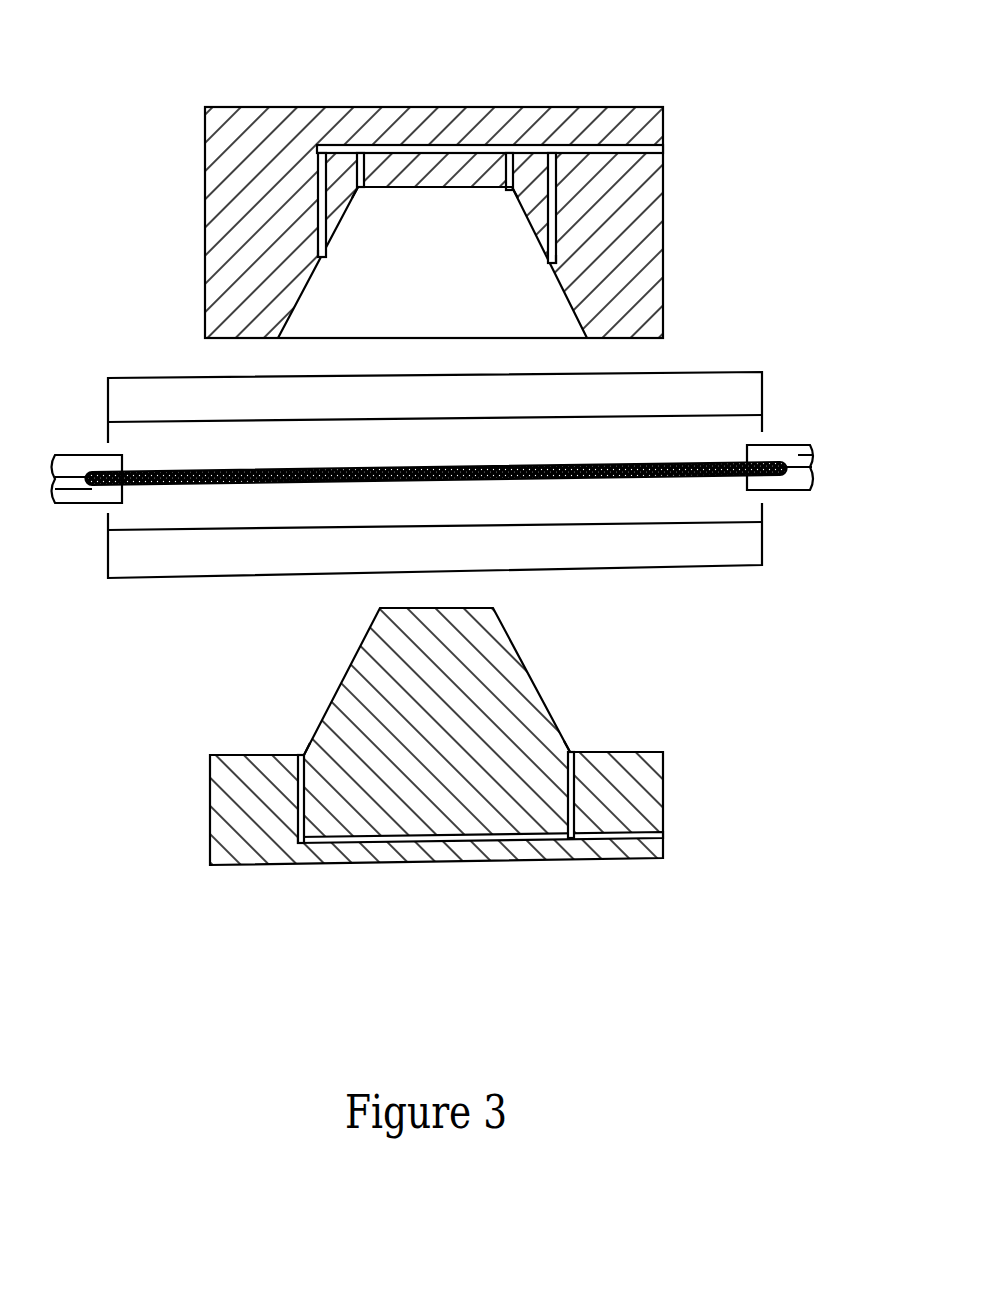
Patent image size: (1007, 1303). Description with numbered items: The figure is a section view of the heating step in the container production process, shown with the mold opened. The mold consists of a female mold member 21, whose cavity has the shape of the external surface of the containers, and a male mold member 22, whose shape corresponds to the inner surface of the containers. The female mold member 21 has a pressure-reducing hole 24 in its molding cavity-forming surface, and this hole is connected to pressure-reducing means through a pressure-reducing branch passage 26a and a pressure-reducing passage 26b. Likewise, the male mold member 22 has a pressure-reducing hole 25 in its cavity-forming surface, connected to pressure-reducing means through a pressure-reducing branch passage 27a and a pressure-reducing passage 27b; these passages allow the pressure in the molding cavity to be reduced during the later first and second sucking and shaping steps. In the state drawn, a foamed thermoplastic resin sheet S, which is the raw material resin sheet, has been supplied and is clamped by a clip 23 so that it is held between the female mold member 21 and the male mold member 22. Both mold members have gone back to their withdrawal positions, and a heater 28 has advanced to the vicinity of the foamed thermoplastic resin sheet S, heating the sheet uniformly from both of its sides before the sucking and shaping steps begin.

The female mold member 21 is at (663, 195).
The male mold member 22 is at (457, 803).
The clip 23 is at (812, 450).
The pressure-reducing hole 24 is at (360, 204).
The pressure-reducing hole 25 is at (297, 744).
The pressure-reducing branch passage 26a is at (338, 153).
The pressure-reducing passage 26b is at (623, 150).
The pressure-reducing branch passage 27a is at (297, 817).
The pressure-reducing passage 27b is at (640, 836).
The heater 28 is at (728, 382).
The foamed thermoplastic resin sheet S is at (713, 462).